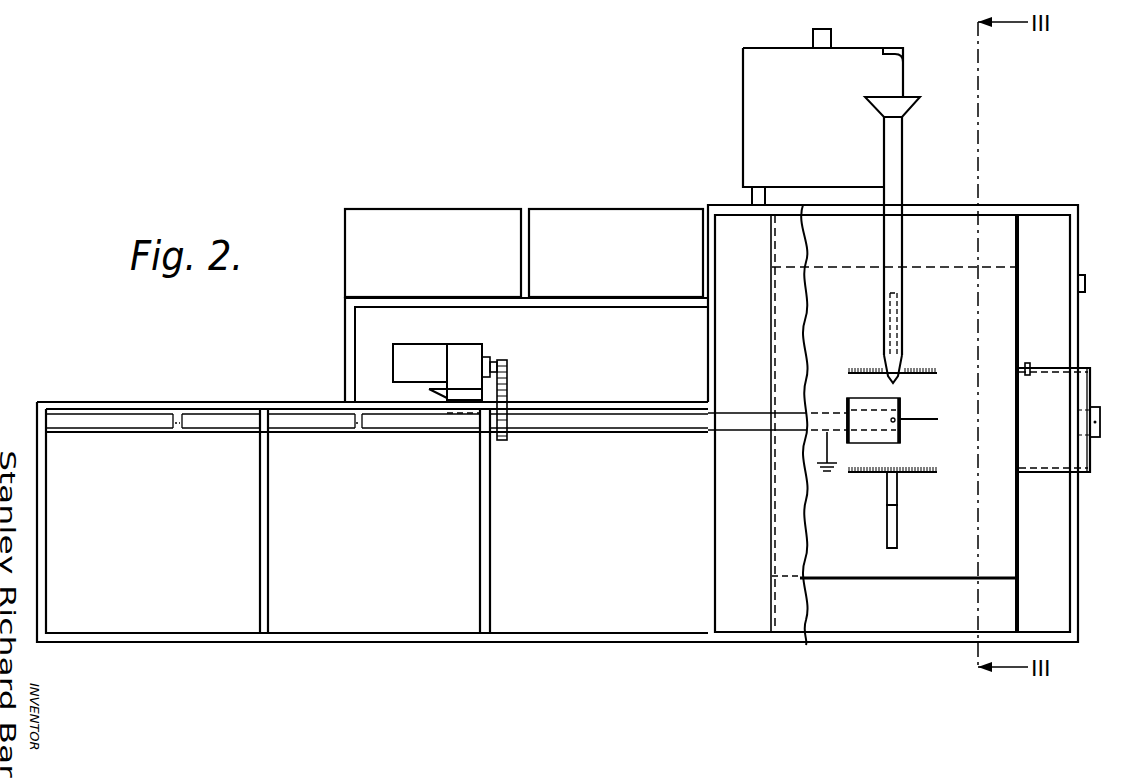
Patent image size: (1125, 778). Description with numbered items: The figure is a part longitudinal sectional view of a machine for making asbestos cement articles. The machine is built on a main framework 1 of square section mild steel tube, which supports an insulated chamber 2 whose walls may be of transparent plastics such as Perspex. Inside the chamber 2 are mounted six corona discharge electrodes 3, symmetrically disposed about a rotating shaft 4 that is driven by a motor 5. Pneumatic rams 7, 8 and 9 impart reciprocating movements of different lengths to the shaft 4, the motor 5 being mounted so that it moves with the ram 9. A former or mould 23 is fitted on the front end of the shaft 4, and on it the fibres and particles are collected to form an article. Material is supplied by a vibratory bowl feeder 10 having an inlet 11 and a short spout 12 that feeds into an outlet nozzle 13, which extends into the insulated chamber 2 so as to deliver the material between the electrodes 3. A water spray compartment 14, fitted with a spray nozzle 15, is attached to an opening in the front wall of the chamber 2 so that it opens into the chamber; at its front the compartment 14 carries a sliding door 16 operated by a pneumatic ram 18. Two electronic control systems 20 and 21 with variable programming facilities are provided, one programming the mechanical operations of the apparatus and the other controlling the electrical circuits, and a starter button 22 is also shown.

The main framework 1 is at (707, 527).
The insulated chamber 2 is at (950, 580).
The corona discharge electrodes 3 is at (908, 417).
The rotating shaft 4 is at (819, 413).
The motor 5 is at (458, 356).
The pneumatic ram 7 is at (130, 434).
The pneumatic ram 8 is at (307, 434).
The pneumatic ram 9 is at (430, 434).
The vibratory bowl feeder 10 is at (827, 125).
The inlet 11 is at (831, 35).
The short spout 12 is at (903, 62).
The outlet nozzle 13 is at (903, 240).
The water spray compartment 14 is at (1049, 474).
The spray nozzle 15 is at (1029, 362).
The sliding door 16 is at (1090, 369).
The pneumatic ram 18 is at (1097, 438).
The electronic control system 20 is at (450, 278).
The electronic control system 21 is at (634, 276).
The starter button 22 is at (1086, 279).
The former or mould 23 is at (900, 437).